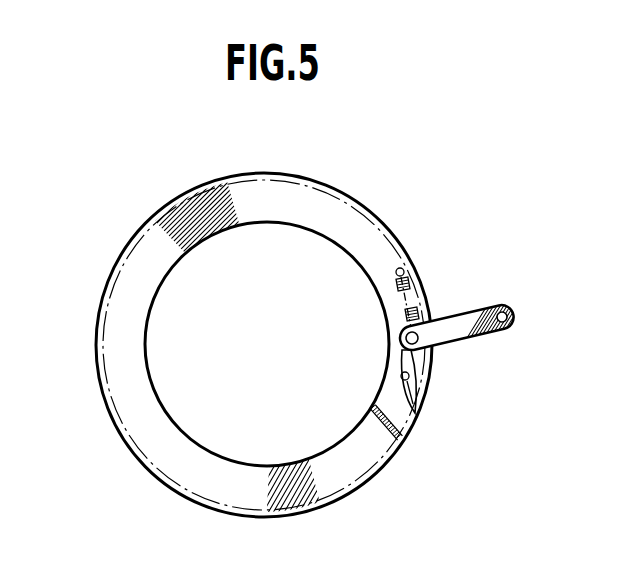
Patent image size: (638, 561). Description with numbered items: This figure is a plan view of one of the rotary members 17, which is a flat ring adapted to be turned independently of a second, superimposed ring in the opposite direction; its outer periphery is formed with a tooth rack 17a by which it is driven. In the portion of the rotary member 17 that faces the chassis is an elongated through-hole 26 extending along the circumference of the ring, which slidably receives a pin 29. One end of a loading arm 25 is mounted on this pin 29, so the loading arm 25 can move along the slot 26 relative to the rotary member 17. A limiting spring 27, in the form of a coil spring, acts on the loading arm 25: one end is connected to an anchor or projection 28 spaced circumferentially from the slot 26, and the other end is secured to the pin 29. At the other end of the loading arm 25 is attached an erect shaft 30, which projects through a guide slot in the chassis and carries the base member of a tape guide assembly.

The rotary member 17 is at (343, 213).
The tooth rack 17a is at (289, 173).
The loading arm 25 is at (452, 337).
The elongated through-hole 26 is at (416, 416).
The limiting spring 27 is at (408, 297).
The anchor projection 28 is at (407, 267).
The pin 29 is at (430, 361).
The erect shaft 30 is at (505, 308).